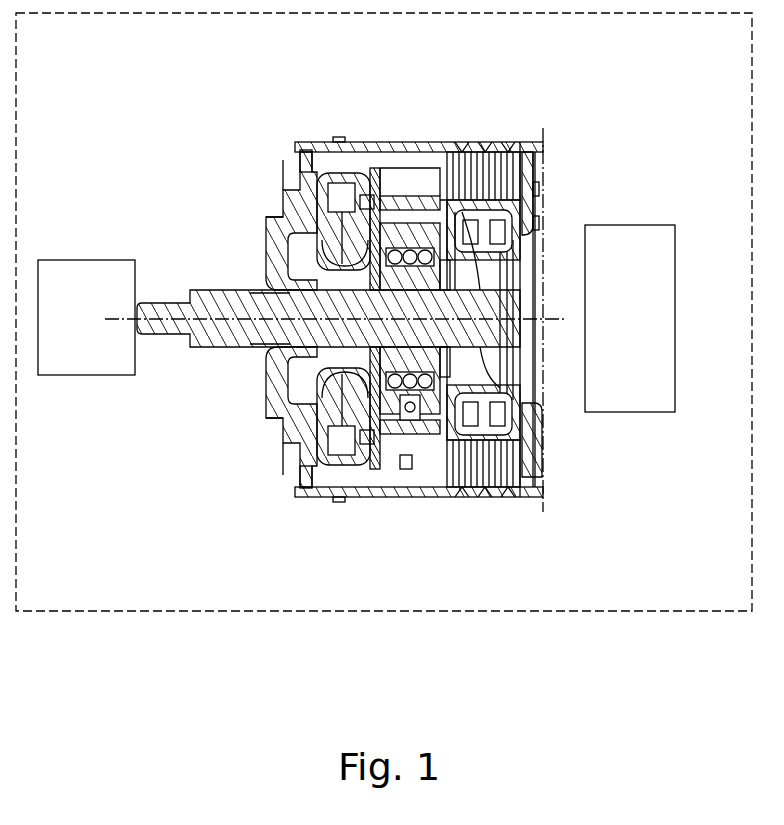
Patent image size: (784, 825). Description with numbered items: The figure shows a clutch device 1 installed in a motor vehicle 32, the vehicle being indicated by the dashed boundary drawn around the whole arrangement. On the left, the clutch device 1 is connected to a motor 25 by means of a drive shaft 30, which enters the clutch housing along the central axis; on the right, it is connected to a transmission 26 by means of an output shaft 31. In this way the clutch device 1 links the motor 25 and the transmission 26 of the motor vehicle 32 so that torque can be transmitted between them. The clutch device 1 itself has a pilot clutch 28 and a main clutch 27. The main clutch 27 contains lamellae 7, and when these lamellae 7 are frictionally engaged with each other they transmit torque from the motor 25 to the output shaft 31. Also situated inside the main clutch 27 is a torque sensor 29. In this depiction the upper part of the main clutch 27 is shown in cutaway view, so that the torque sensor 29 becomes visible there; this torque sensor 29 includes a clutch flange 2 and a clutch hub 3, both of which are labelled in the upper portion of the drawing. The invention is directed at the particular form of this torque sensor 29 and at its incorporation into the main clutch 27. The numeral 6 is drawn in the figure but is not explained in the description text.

The clutch device 1 is at (238, 198).
The clutch flange 2 is at (539, 197).
The clutch hub 3 is at (478, 235).
The housing cover 6 is at (528, 198).
The lamellae 7 is at (446, 192).
The motor 25 is at (80, 272).
The transmission 26 is at (633, 245).
The main clutch 27 is at (465, 432).
The pilot clutch 28 is at (340, 440).
The torque sensor 29 is at (490, 198).
The drive shaft 30 is at (212, 330).
The output shaft 31 is at (541, 428).
The motor vehicle 32 is at (70, 13).